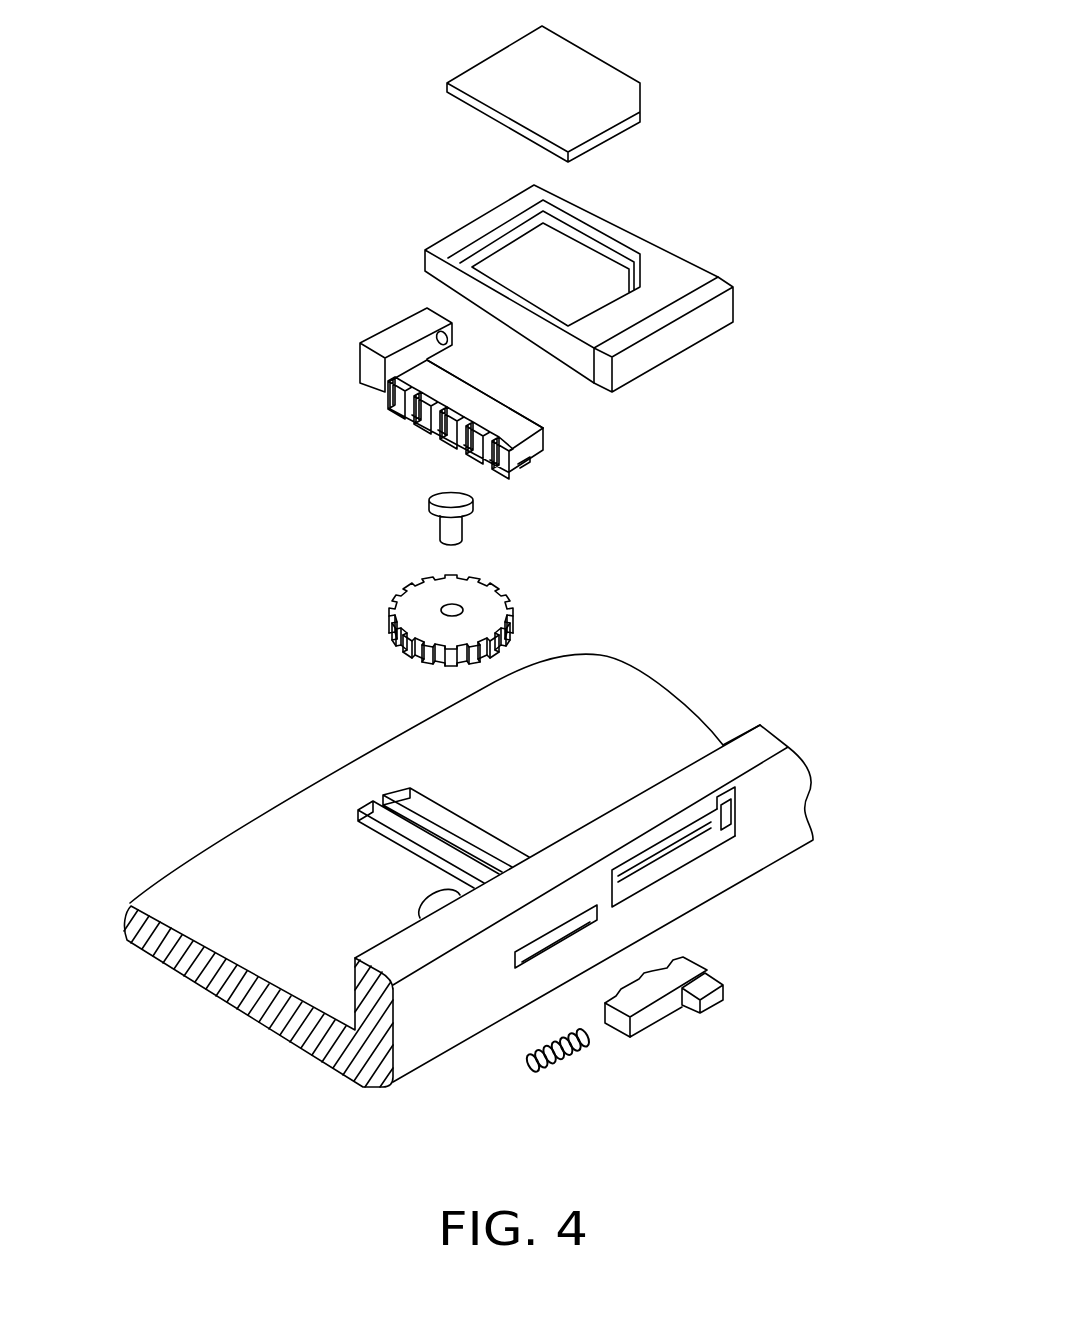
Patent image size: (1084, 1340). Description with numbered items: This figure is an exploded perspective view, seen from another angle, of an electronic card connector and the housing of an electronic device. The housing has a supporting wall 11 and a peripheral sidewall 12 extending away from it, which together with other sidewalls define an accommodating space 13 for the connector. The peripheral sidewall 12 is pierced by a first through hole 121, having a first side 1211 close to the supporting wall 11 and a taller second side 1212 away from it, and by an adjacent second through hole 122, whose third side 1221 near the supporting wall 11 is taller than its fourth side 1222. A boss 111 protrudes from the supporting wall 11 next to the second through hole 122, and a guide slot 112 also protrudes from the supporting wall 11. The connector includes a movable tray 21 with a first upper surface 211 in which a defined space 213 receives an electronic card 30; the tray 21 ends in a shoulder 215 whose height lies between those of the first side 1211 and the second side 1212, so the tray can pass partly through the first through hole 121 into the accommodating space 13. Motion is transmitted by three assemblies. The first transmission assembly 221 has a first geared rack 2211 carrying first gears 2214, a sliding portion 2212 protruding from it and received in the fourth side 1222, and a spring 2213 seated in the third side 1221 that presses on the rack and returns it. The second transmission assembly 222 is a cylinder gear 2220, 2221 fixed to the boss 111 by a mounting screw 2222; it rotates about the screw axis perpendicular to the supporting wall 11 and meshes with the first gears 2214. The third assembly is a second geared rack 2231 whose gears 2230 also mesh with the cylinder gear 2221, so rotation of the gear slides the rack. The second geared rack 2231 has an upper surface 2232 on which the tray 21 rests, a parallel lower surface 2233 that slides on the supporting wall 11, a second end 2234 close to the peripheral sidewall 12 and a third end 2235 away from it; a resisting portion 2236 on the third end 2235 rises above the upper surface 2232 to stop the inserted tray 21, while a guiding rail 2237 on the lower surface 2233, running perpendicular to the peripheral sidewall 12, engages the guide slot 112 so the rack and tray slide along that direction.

The electronic card 30 is at (590, 83).
The movable tray 21 is at (597, 276).
The first upper surface 211 is at (667, 277).
The defined space 213 is at (517, 232).
The shoulder 215 is at (722, 320).
The gears 2230 is at (471, 414).
The second geared rack 2231 is at (460, 433).
The upper surface 2232 is at (467, 393).
The lower surface 2233 is at (540, 455).
The second end 2234 is at (548, 396).
The third end 2235 is at (372, 372).
The resisting portion 2236 is at (405, 325).
The guiding rail 2237 is at (525, 462).
The second transmission assembly 222 is at (423, 579).
The knob 2220 is at (465, 620).
The cylinder gear 2221 is at (418, 614).
The mounting screw 2222 is at (445, 528).
The supporting wall 11 is at (603, 745).
The peripheral sidewall 12 is at (765, 745).
The accommodating space 13 is at (462, 750).
The boss 111 is at (432, 907).
The guide slot 112 is at (407, 813).
The first through hole 121 is at (746, 889).
The first side 1211 is at (697, 822).
The second side 1212 is at (697, 847).
The second through hole 122 is at (501, 1034).
The third side 1221 is at (523, 957).
The fourth side 1222 is at (548, 945).
The first transmission assembly 221 is at (693, 1051).
The first geared rack 2211 is at (650, 988).
The sliding portion 2212 is at (718, 1000).
The spring 2213 is at (572, 1060).
The first gears 2214 is at (645, 1008).